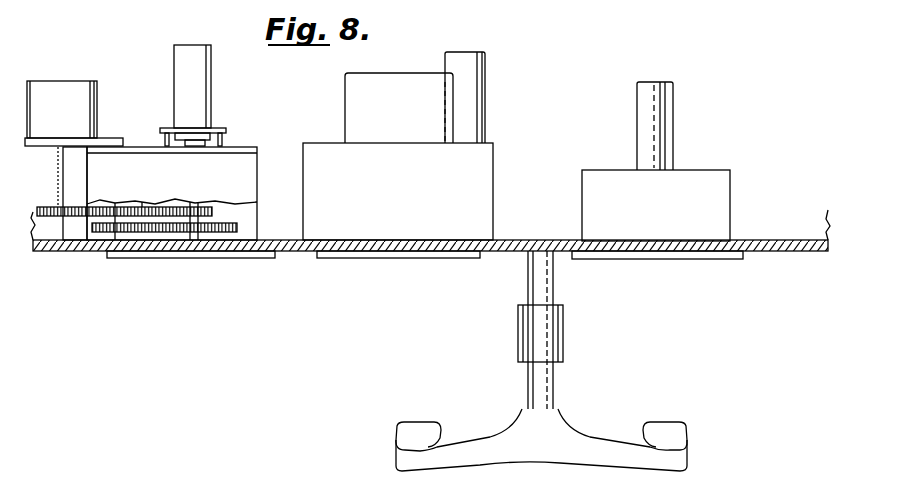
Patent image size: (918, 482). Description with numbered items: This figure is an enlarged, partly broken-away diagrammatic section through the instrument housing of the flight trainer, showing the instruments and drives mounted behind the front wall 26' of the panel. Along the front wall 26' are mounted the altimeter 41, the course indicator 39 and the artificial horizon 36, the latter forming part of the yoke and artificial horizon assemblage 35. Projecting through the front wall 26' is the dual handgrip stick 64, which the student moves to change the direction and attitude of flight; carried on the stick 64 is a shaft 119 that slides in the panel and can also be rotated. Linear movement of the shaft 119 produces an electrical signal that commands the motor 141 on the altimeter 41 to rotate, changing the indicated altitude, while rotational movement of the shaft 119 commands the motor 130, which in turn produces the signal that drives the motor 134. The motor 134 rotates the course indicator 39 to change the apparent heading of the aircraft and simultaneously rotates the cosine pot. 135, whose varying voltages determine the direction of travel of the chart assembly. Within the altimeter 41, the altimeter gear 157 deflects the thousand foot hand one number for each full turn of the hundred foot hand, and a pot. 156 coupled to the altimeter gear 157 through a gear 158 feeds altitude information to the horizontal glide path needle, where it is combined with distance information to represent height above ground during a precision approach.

The front wall 26' is at (430, 256).
The yoke and artificial horizon assemblage 35 is at (734, 183).
The artificial horizon 36 is at (640, 259).
The course indicator 39 is at (362, 260).
The altimeter 41 is at (152, 258).
The dual handgrip stick 64 is at (498, 437).
The shaft 119 is at (553, 293).
The motor 130 is at (670, 106).
The motor 134 is at (484, 90).
The cosine pot. 135 is at (497, 158).
The motor 141 is at (206, 92).
The pot. 156 is at (95, 93).
The altimeter gear 157 is at (143, 207).
The gear 158 is at (68, 218).